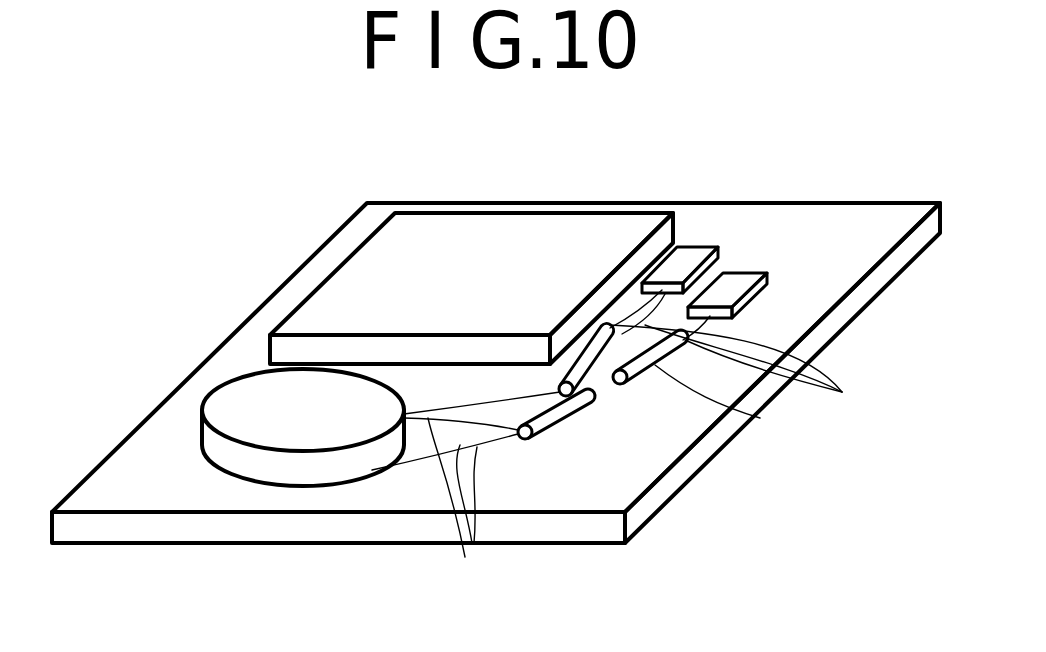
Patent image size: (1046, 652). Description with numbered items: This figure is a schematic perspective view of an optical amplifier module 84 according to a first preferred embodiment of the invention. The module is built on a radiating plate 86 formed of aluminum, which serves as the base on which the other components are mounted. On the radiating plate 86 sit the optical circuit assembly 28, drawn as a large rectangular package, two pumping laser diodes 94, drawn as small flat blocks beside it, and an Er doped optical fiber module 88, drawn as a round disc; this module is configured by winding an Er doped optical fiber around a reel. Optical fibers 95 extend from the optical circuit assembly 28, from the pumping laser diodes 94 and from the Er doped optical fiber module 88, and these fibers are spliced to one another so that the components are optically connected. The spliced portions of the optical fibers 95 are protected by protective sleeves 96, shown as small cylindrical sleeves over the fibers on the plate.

The optical amplifier module 84 is at (530, 197).
The radiating plate 86 is at (878, 285).
The optical circuit assembly 28 is at (350, 268).
The Er doped optical fiber module 88 is at (250, 402).
The pumping laser diodes 94 is at (747, 282).
The optical fibers 95 is at (623, 442).
The protective sleeves 96 is at (582, 423).